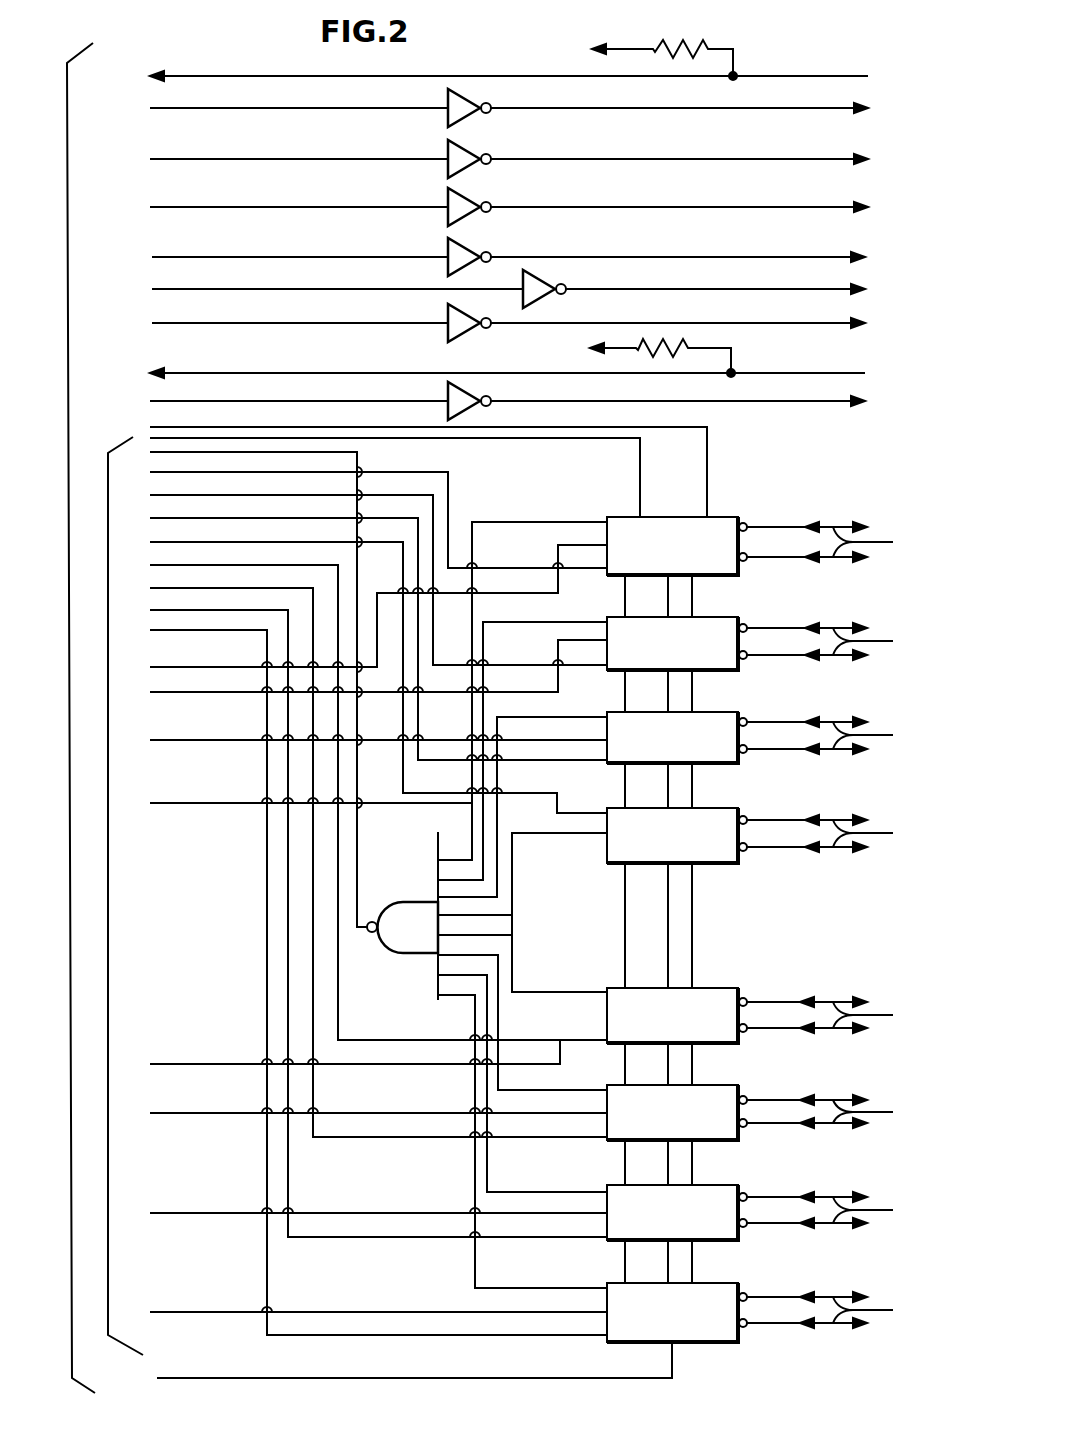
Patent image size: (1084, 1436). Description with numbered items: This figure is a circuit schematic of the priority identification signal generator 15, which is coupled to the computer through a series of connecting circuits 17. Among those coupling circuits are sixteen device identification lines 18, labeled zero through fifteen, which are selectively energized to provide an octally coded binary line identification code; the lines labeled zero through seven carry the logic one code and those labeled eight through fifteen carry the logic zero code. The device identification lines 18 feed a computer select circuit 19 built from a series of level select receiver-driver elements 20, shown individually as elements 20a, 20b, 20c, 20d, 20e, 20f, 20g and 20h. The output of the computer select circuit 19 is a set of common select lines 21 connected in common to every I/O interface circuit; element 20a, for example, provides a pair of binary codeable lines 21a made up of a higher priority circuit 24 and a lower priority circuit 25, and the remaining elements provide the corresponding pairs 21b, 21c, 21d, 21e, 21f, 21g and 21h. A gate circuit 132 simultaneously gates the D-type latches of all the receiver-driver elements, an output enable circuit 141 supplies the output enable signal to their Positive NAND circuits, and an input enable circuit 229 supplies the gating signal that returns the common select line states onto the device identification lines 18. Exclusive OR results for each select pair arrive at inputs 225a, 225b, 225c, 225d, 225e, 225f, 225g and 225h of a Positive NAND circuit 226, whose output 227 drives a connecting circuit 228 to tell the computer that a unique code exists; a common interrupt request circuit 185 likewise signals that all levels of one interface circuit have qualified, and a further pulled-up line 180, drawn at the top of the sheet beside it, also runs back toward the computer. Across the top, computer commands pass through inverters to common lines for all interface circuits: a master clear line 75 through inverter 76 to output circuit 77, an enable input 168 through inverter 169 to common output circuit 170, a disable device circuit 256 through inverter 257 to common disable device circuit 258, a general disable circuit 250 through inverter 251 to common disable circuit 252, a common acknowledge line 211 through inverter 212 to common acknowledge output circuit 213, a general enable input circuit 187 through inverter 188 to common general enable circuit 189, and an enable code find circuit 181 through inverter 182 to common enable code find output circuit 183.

The priority identification signal generator 15 is at (830, 56).
The connecting circuits 17 is at (62, 66).
The device identification lines 18 is at (110, 900).
The computer select circuit 19 is at (788, 460).
The level select receiver-driver elements 20 is at (718, 498).
The level select receiver-driver element 20a is at (716, 577).
The level select receiver-driver element 20b is at (726, 672).
The level select receiver-driver element 20c is at (726, 765).
The level select receiver-driver element 20d is at (720, 865).
The level select receiver-driver element 20e is at (726, 1045).
The level select receiver-driver element 20f is at (722, 1142).
The level select receiver-driver element 20g is at (720, 1242).
The level select receiver-driver element 20h is at (720, 1344).
The common select lines 21 is at (812, 497).
The pair of binary codeable lines 21a is at (836, 542).
The pair of common select lines 21b is at (836, 641).
The pair of common select lines 21c is at (836, 735).
The pair of common select lines 21d is at (836, 833).
The pair of common select lines 21e is at (836, 1015).
The pair of common select lines 21f is at (834, 1111).
The pair of common select lines 21g is at (836, 1210).
The pair of common select lines 21h is at (836, 1310).
The higher priority circuit 24 is at (840, 522).
The lower priority circuit 25 is at (835, 562).
The master clear line 75 is at (228, 257).
The inverter 76 is at (468, 255).
The output circuit 77 is at (832, 257).
The gate circuit 132 is at (182, 1378).
The output enable circuit 141 is at (216, 427).
The enable input 168 is at (218, 108).
The inverter 169 is at (468, 106).
The common output circuit 170 is at (787, 108).
The line with pull-up resistor 180 is at (212, 76).
The enable code find circuit 181 is at (213, 401).
The inverter 182 is at (468, 399).
The common enable code find output circuit 183 is at (838, 401).
The common interrupt request circuit 185 is at (206, 373).
The general enable input circuit 187 is at (243, 323).
The inverter 188 is at (448, 323).
The common general enable circuit 189 is at (830, 323).
The common acknowledge line 211 is at (220, 289).
The inverter 212 is at (545, 287).
The common acknowledge output circuit 213 is at (828, 289).
The input of Positive NAND circuit 225a is at (460, 856).
The input of Positive NAND circuit 225b is at (460, 879).
The input of Positive NAND circuit 225c is at (462, 896).
The input of Positive NAND circuit 225d is at (462, 914).
The input of Positive NAND circuit 225e is at (462, 934).
The input of Positive NAND circuit 225f is at (462, 954).
The input of Positive NAND circuit 225g is at (462, 974).
The input of Positive NAND circuit 225h is at (452, 1003).
The Positive NAND circuit 226 is at (402, 916).
The output of Positive NAND 227 is at (359, 872).
The connecting circuit 228 is at (160, 448).
The input enable circuit 229 is at (433, 438).
The general disable circuit 250 is at (213, 207).
The inverter 251 is at (468, 205).
The common disable circuit 252 is at (787, 207).
The disable device circuit 256 is at (213, 159).
The inverter 257 is at (468, 157).
The common disable device circuit 258 is at (787, 159).